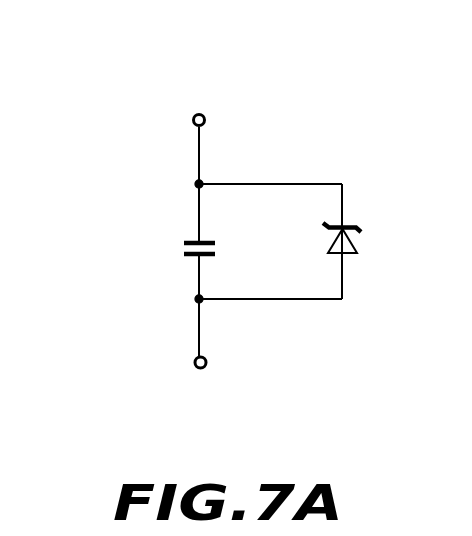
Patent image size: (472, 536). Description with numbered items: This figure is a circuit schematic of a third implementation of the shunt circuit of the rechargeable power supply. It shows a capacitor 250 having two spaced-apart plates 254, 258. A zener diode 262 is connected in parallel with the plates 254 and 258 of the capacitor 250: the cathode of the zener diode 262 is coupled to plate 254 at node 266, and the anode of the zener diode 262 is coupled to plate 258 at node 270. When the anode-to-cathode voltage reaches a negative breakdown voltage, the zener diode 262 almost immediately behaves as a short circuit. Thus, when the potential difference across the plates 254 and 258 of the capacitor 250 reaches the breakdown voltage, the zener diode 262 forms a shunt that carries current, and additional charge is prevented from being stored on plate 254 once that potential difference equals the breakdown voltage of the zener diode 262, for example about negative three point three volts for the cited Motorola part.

The capacitor 250 is at (181, 252).
The plate 254 is at (188, 241).
The plate 258 is at (187, 257).
The zener diode 262 is at (351, 246).
The node 266 is at (203, 113).
The node 270 is at (203, 369).